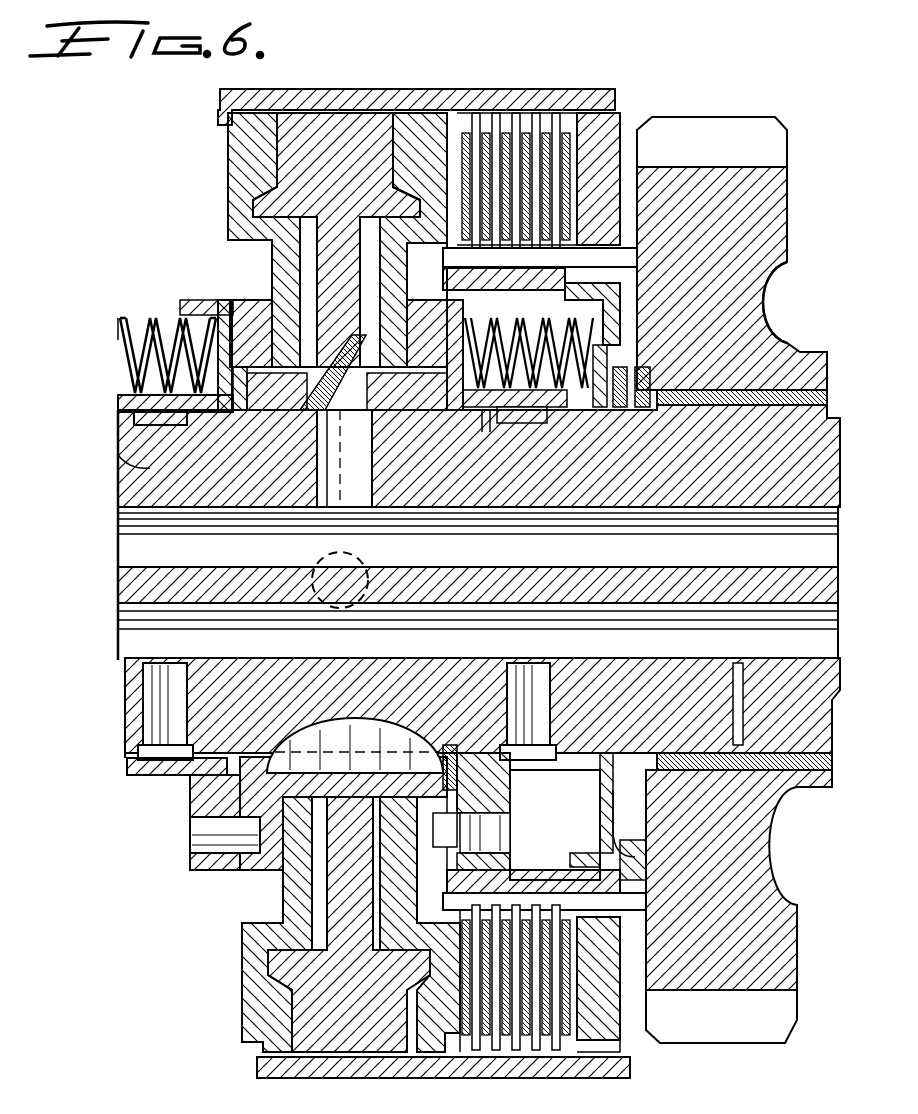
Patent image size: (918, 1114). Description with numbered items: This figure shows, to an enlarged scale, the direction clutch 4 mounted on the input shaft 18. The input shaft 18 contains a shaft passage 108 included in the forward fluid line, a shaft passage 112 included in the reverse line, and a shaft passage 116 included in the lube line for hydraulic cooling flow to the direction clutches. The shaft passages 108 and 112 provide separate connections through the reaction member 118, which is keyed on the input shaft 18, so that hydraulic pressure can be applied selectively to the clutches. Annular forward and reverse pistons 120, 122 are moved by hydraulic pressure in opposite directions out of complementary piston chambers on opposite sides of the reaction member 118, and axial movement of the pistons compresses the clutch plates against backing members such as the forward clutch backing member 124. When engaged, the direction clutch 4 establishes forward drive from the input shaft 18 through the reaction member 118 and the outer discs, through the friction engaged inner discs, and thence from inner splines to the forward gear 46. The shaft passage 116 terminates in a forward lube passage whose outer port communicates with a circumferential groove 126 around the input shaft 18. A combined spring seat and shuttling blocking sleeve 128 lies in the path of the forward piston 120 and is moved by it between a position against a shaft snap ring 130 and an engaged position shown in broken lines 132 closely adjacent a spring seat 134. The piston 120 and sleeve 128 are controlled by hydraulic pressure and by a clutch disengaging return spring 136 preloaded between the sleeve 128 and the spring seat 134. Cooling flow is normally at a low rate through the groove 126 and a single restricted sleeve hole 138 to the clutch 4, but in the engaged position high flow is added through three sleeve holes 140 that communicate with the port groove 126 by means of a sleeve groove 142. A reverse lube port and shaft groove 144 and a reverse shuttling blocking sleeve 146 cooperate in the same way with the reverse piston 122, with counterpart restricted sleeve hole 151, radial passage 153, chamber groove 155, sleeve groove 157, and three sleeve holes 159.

The direction clutch 4 is at (492, 135).
The input shaft 18 is at (700, 388).
The forward gear 46 is at (768, 288).
The shaft passage 108 is at (672, 525).
The shaft passage 112 is at (315, 560).
The shaft passage 116 is at (196, 612).
The reaction member 118 is at (356, 170).
The forward piston 120 is at (410, 312).
The reverse piston 122 is at (283, 881).
The forward clutch backing member 124 is at (612, 178).
The circumferential groove 126 is at (520, 760).
The combined spring seat and shuttling blocking sleeve 128 is at (520, 425).
The shaft snap ring 130 is at (346, 373).
The broken lines 132 is at (610, 240).
The spring seat 134 is at (600, 306).
The clutch disengaging return spring 136 is at (600, 354).
The restricted sleeve hole 138 is at (532, 425).
The sleeve holes 140 is at (478, 408).
The sleeve groove 142 is at (481, 408).
The reverse lube port and shaft groove 144 is at (163, 775).
The reverse shuttling blocking sleeve 146 is at (195, 820).
The restricted sleeve hole 151 is at (150, 393).
The radial passage 153 is at (172, 720).
The chamber groove 155 is at (118, 437).
The sleeve groove 157 is at (122, 520).
The sleeve holes 159 is at (142, 468).